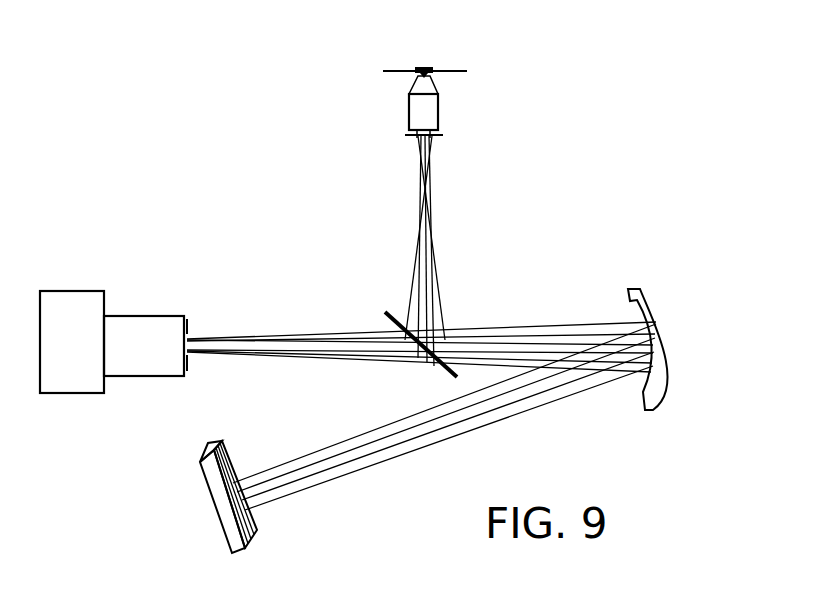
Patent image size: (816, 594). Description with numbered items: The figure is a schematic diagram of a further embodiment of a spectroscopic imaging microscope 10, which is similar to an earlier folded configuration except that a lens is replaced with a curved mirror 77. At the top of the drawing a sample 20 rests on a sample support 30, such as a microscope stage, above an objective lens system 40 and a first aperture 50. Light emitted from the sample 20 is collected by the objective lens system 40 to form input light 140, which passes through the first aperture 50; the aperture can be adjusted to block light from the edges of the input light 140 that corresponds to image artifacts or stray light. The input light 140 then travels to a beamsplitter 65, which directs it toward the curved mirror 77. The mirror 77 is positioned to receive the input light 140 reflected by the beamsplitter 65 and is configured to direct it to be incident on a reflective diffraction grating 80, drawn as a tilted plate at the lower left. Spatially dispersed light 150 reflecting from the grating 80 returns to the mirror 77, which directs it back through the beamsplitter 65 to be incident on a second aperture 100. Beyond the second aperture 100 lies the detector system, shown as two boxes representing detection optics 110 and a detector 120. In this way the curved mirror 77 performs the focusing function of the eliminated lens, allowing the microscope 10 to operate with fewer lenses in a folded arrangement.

The microscope 10 is at (590, 136).
The sample 20 is at (428, 67).
The sample support 30 is at (458, 73).
The objective lens system 40 is at (409, 107).
The first aperture 50 is at (441, 137).
The beamsplitter 65 is at (385, 317).
The curved mirror 77 is at (637, 289).
The reflective diffraction grating 80 is at (200, 490).
The second aperture 100 is at (189, 322).
The detection optics 110 is at (165, 356).
The detector 120 is at (93, 349).
The input light 140 is at (426, 200).
The spatially dispersed light 150 is at (310, 350).